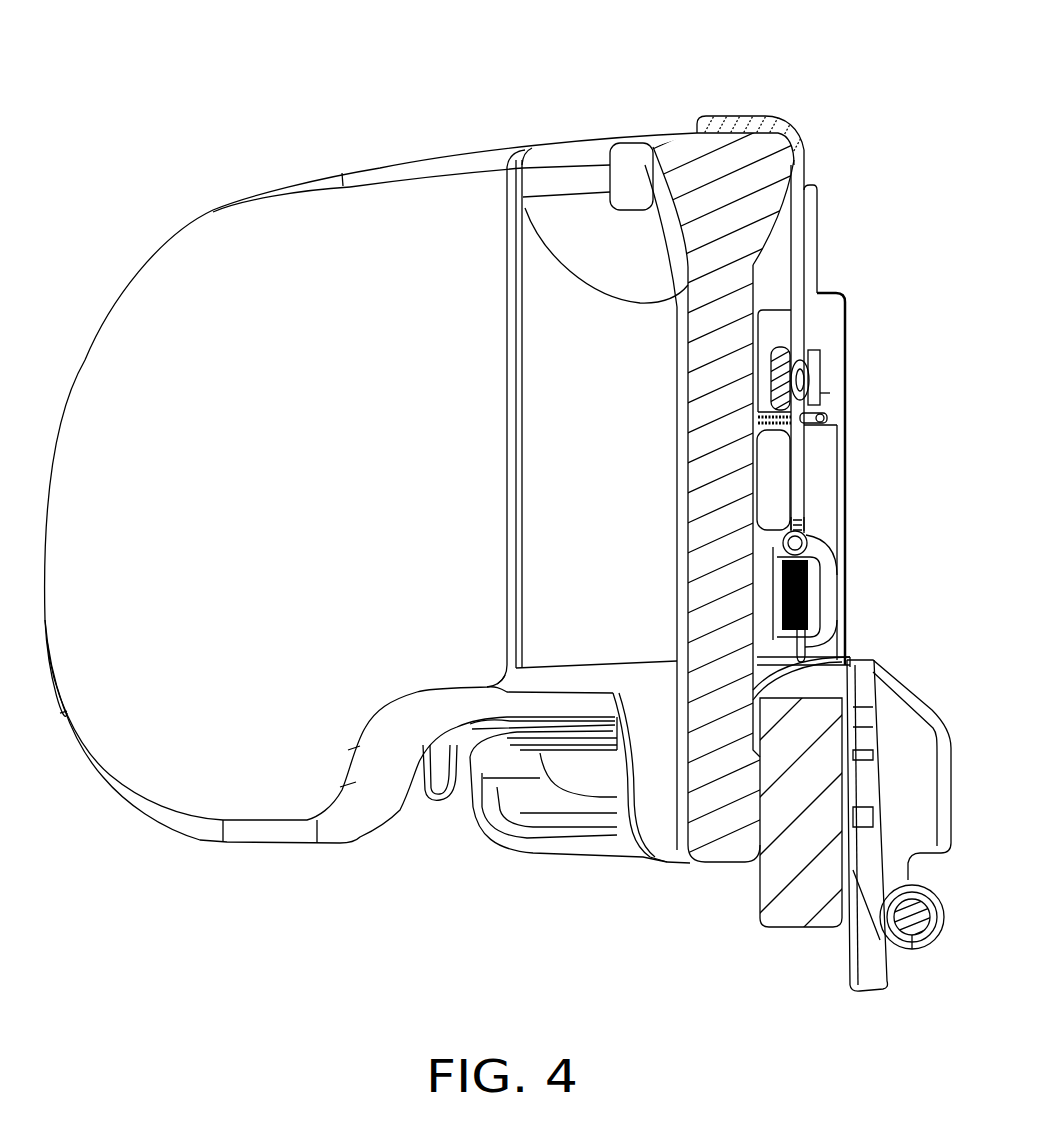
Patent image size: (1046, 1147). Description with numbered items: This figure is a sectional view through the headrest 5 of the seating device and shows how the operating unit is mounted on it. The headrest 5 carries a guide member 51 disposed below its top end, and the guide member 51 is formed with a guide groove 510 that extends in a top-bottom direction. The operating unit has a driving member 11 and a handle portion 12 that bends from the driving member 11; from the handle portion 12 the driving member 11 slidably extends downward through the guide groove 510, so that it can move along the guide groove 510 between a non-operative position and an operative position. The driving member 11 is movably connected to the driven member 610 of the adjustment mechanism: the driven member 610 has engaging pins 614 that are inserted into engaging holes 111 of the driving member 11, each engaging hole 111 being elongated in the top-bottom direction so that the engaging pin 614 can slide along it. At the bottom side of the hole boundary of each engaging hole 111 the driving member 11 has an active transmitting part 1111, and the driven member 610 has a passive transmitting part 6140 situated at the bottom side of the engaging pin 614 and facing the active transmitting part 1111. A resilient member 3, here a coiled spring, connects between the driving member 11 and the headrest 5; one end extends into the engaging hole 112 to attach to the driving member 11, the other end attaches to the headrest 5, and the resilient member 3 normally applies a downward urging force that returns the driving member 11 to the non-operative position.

The headrest 5 is at (284, 247).
The handle portion 12 is at (743, 118).
The guide groove 510 is at (808, 207).
The guide member 51 is at (810, 257).
The driven member 610 is at (784, 373).
The engaging pin 614 is at (801, 383).
The passive transmitting part 6140 is at (830, 395).
The engaging hole 111 is at (837, 410).
The active transmitting part 1111 is at (807, 443).
The driving member 11 is at (793, 490).
The engaging hole 112 is at (807, 525).
The resilient member 3 is at (805, 602).